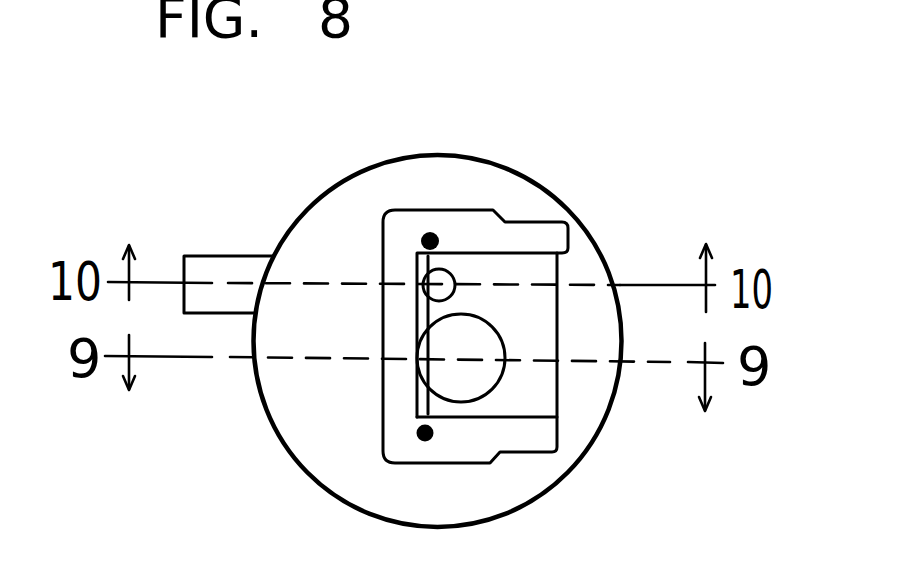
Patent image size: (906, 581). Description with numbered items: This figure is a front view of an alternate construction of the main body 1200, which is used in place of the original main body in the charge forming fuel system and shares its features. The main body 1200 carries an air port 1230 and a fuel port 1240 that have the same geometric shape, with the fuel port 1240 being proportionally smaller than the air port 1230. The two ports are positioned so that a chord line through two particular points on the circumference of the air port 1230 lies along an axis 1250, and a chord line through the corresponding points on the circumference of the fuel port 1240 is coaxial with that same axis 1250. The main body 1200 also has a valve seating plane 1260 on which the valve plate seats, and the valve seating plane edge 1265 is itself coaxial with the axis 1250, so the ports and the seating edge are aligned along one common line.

The main body 1200 is at (478, 158).
The air port 1230 is at (492, 352).
The fuel port 1240 is at (457, 270).
The axis 1250 is at (422, 314).
The valve seating plane 1260 is at (545, 388).
The valve seating plane edge 1265 is at (423, 402).